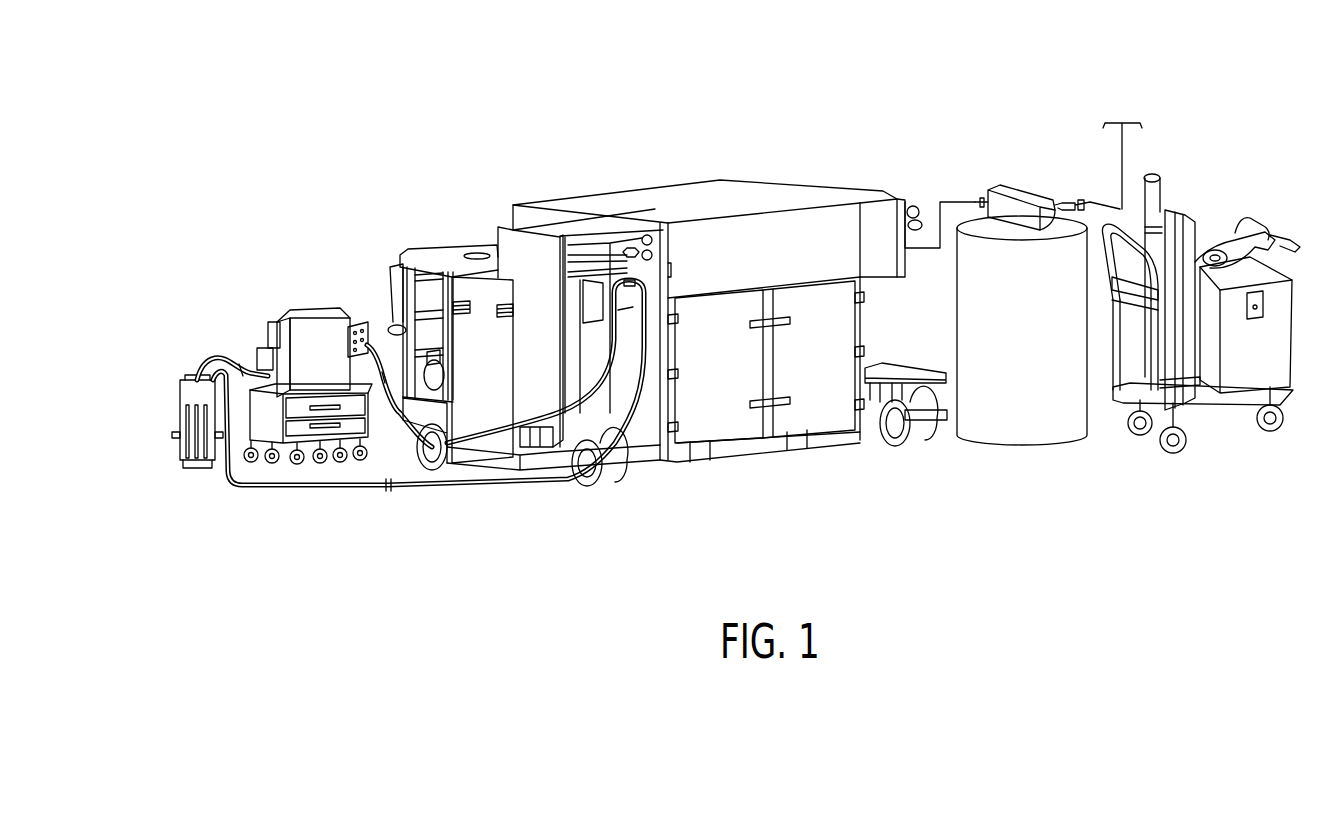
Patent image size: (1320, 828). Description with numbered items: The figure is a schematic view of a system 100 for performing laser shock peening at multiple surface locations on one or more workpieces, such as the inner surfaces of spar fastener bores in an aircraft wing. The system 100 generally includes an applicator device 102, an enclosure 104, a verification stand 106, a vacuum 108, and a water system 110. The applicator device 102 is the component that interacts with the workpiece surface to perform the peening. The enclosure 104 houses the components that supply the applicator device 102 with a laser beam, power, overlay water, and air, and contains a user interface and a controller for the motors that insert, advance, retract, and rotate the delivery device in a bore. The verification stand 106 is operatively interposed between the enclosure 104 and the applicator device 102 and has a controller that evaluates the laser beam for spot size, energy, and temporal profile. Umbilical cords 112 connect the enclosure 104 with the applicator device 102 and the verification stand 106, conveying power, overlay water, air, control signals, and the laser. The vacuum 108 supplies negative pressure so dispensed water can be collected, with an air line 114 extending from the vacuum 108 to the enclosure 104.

The system 100 is at (335, 160).
The applicator device 102 is at (178, 384).
The enclosure 104 is at (646, 193).
The verification stand 106 is at (303, 312).
The vacuum 108 is at (1022, 190).
The water system 110 is at (1203, 262).
The umbilical cords 112 is at (217, 356).
The air line 114 is at (947, 195).